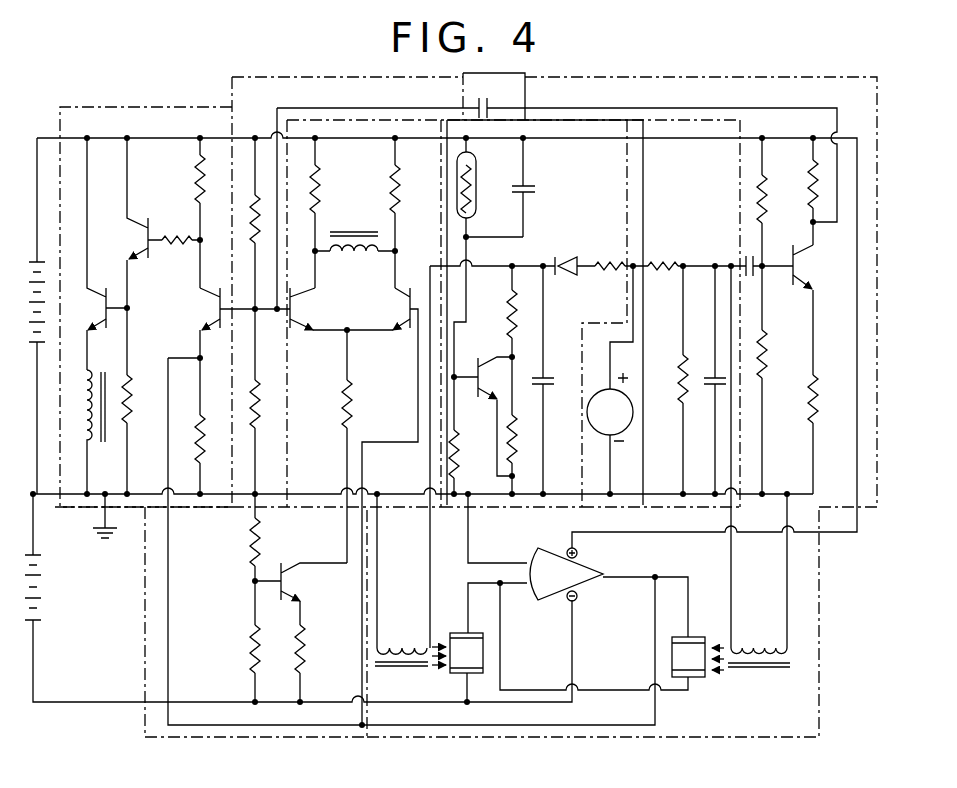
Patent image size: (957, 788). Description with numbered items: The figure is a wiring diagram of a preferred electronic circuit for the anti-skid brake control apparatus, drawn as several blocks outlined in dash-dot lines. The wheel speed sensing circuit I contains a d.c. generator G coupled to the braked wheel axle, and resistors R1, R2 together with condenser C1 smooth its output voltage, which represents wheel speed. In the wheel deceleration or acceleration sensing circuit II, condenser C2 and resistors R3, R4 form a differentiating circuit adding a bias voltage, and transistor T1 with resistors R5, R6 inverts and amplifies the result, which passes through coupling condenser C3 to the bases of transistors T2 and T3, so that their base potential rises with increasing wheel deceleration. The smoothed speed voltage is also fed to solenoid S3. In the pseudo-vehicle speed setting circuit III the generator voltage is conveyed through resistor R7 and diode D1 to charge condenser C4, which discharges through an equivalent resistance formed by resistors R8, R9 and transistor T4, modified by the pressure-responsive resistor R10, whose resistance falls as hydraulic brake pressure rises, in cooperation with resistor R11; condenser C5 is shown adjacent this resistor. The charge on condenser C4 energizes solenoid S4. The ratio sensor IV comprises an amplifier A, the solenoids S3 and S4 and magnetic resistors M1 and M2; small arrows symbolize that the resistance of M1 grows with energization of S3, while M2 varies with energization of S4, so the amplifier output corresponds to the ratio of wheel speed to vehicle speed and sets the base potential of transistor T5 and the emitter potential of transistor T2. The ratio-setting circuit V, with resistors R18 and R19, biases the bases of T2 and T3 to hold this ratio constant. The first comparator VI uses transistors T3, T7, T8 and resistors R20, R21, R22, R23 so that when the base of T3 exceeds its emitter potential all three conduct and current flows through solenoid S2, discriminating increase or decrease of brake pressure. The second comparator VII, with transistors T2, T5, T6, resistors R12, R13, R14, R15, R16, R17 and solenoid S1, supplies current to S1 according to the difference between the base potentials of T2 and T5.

The wheel speed sensing circuit I is at (715, 122).
The wheel deceleration or acceleration sensing circuit II is at (772, 76).
The pseudo-vehicle speed setting circuit III is at (565, 122).
The ratio sensor IV is at (819, 668).
The ratio-setting circuit V is at (323, 77).
The first comparator VI is at (177, 107).
The second comparator VII is at (145, 610).
The resistor R1 is at (663, 253).
The resistor R2 is at (670, 380).
The resistor R3 is at (775, 412).
The resistor R4 is at (762, 200).
The resistor R5 is at (812, 186).
The resistor R6 is at (797, 434).
The resistor R7 is at (608, 254).
The resistor R8 is at (496, 311).
The resistor R9 is at (514, 432).
The pressure-responsive resistor R10 is at (484, 187).
The resistor R11 is at (469, 435).
The resistor R12 is at (332, 213).
The resistor R13 is at (411, 213).
The resistor R14 is at (365, 446).
The resistor R15 is at (271, 571).
The resistor R16 is at (234, 663).
The resistor R17 is at (318, 663).
The resistor R18 is at (241, 259).
The resistor R19 is at (260, 410).
The resistor R20 is at (182, 213).
The resistor R21 is at (193, 440).
The resistor R22 is at (174, 229).
The resistor R23 is at (143, 401).
The condenser C1 is at (708, 388).
The condenser C2 is at (749, 253).
The coupling condenser C3 is at (497, 101).
The condenser C4 is at (550, 380).
The capacitor C5 is at (536, 187).
The transistor T1 is at (810, 310).
The transistor T2 is at (341, 309).
The transistor T3 is at (198, 323).
The transistor T4 is at (486, 407).
The transistor T5 is at (389, 309).
The transistor T6 is at (301, 594).
The transistor T7 is at (126, 223).
The transistor T8 is at (95, 254).
The solenoid S1 is at (355, 231).
The solenoid S2 is at (83, 432).
The solenoid S3 is at (751, 468).
The solenoid S4 is at (410, 580).
The diode D1 is at (564, 281).
The d.c. generator G is at (610, 380).
The amplifier A is at (566, 574).
The magnetic resistor M1 is at (688, 657).
The magnetic resistor M2 is at (466, 667).